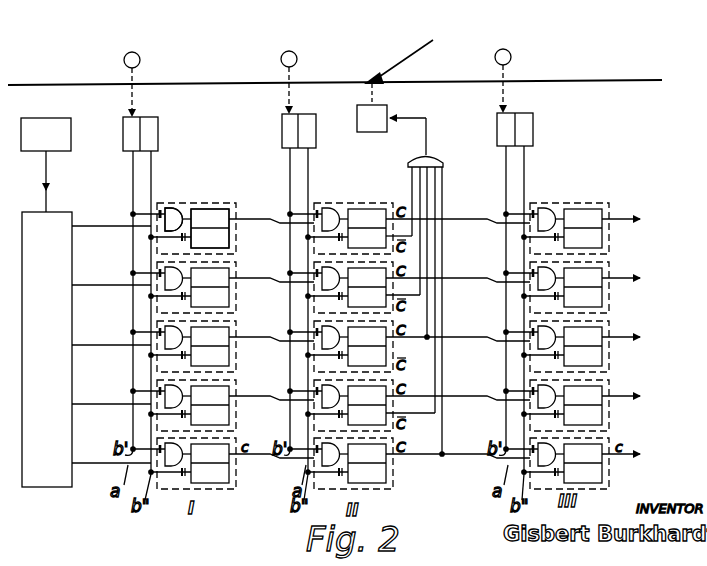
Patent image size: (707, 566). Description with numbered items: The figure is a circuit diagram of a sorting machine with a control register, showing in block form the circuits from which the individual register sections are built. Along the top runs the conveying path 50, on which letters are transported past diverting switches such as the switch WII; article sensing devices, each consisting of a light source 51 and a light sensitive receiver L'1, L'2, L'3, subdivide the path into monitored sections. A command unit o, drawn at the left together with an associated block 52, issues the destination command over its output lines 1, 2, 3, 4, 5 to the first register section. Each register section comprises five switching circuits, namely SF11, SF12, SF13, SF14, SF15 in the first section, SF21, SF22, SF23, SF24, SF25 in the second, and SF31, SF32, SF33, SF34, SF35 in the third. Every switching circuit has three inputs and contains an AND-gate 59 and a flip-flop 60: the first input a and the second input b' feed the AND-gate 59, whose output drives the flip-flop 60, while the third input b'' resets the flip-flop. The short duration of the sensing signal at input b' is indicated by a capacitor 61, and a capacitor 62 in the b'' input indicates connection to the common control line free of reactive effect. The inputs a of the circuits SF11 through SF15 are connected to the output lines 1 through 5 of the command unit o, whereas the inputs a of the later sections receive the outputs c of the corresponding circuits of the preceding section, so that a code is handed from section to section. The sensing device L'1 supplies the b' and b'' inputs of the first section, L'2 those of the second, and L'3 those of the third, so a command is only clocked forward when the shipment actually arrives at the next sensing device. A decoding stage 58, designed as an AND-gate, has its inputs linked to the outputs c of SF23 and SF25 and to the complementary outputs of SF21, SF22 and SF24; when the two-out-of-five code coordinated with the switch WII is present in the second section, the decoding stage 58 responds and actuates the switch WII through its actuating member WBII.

The conveying path 50 is at (212, 83).
The light source 51 is at (287, 51).
The control unit 52 is at (31, 152).
The decoding stage 58 is at (412, 161).
The AND-gate 59 is at (173, 207).
The flip-flop 60 is at (217, 208).
The capacitor 61 is at (160, 212).
The capacitor 62 is at (181, 238).
The output line 1 is at (104, 226).
The output line 2 is at (105, 285).
The output line 3 is at (105, 345).
The output line 4 is at (105, 403).
The output line 5 is at (104, 463).
The command unit o is at (47, 365).
The sensing device L'1 is at (124, 144).
The sensing device L'2 is at (285, 138).
The sensing device L'3 is at (503, 136).
The switch WII is at (398, 62).
The actuating member WBII is at (387, 111).
The switching circuit SF11 is at (236, 237).
The switching circuit SF12 is at (236, 296).
The switching circuit SF13 is at (236, 355).
The switching circuit SF14 is at (236, 414).
The switching circuit SF15 is at (236, 472).
The switching circuit SF21 is at (372, 198).
The switching circuit SF22 is at (393, 290).
The switching circuit SF23 is at (393, 352).
The switching circuit SF24 is at (392, 400).
The switching circuit SF25 is at (395, 469).
The switching circuit SF31 is at (610, 236).
The switching circuit SF32 is at (610, 295).
The switching circuit SF33 is at (610, 354).
The switching circuit SF34 is at (610, 413).
The switching circuit SF35 is at (610, 471).